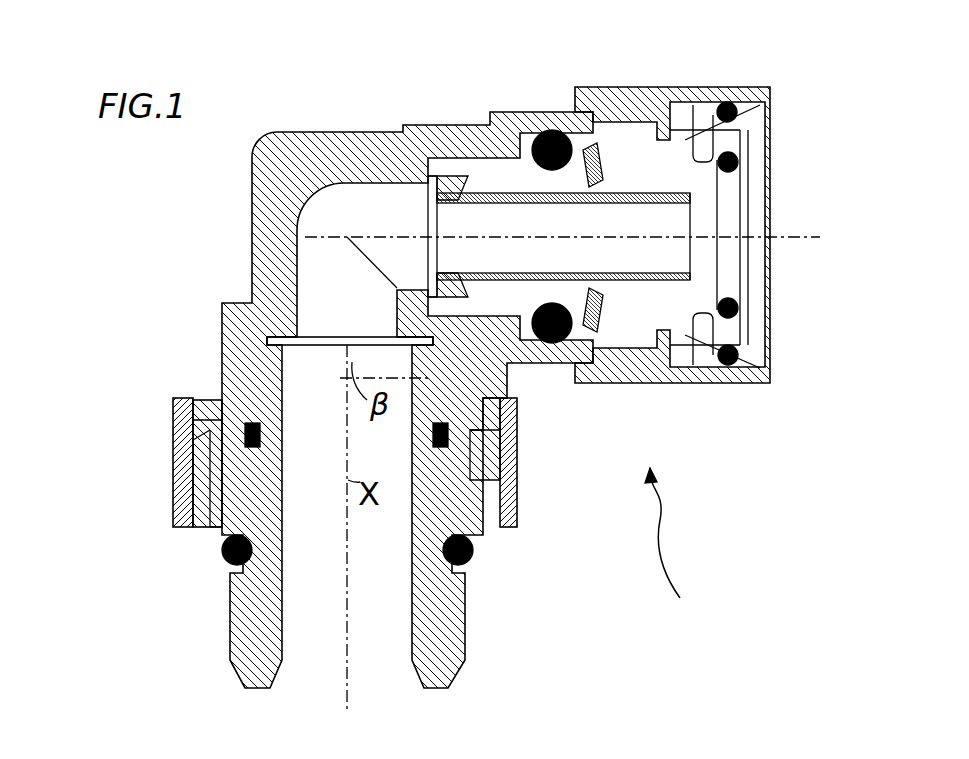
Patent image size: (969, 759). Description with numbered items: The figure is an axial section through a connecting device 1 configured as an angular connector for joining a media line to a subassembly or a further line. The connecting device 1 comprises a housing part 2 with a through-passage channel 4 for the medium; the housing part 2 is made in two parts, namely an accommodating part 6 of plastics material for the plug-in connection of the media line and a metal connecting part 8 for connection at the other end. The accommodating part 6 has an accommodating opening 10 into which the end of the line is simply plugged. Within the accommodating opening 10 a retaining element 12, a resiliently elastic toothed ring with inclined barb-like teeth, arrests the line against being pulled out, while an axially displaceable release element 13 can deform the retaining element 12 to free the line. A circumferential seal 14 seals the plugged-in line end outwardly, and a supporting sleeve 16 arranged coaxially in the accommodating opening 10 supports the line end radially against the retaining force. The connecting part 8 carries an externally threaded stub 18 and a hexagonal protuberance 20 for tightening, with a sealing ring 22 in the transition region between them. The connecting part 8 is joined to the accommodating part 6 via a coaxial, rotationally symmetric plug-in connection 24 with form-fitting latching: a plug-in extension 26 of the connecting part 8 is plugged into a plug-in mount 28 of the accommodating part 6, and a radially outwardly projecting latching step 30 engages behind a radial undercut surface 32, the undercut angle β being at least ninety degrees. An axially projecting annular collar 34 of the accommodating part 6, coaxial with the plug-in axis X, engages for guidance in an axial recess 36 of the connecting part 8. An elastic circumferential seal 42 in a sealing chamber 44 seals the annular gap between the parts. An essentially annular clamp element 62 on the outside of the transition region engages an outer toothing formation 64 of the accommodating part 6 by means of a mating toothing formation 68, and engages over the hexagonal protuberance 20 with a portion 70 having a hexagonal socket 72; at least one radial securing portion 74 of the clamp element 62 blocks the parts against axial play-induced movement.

The connecting device 1 is at (674, 550).
The housing part 2 is at (330, 122).
The through-passage channel 4 is at (383, 215).
The accommodating part 6 is at (460, 135).
The connecting part 8 is at (235, 525).
The accommodating opening 10 is at (712, 187).
The retaining element 12 is at (583, 155).
The release element 13 is at (697, 385).
The circumferential seal 14 is at (548, 128).
The supporting sleeve 16 is at (653, 195).
The externally threaded stub 18 is at (457, 628).
The hexagonal protuberance 20 is at (193, 480).
The sealing ring 22 is at (472, 553).
The plug-in connection 24 is at (213, 400).
The plug-in extension 26 is at (277, 386).
The plug-in mount 28 is at (270, 343).
The latching step 30 is at (245, 375).
The radial undercut surface 32 is at (428, 375).
The annular collar 34 is at (462, 447).
The axial recess 36 is at (470, 485).
The circumferential seal 42 is at (262, 440).
The sealing chamber 44 is at (438, 445).
The clamp element 62 is at (165, 440).
The outer toothing formation 64 is at (220, 374).
The mating toothing formation 68 is at (216, 366).
The portion 70 is at (175, 466).
The hexagonal socket 72 is at (212, 518).
The radial securing portion 74 is at (203, 423).